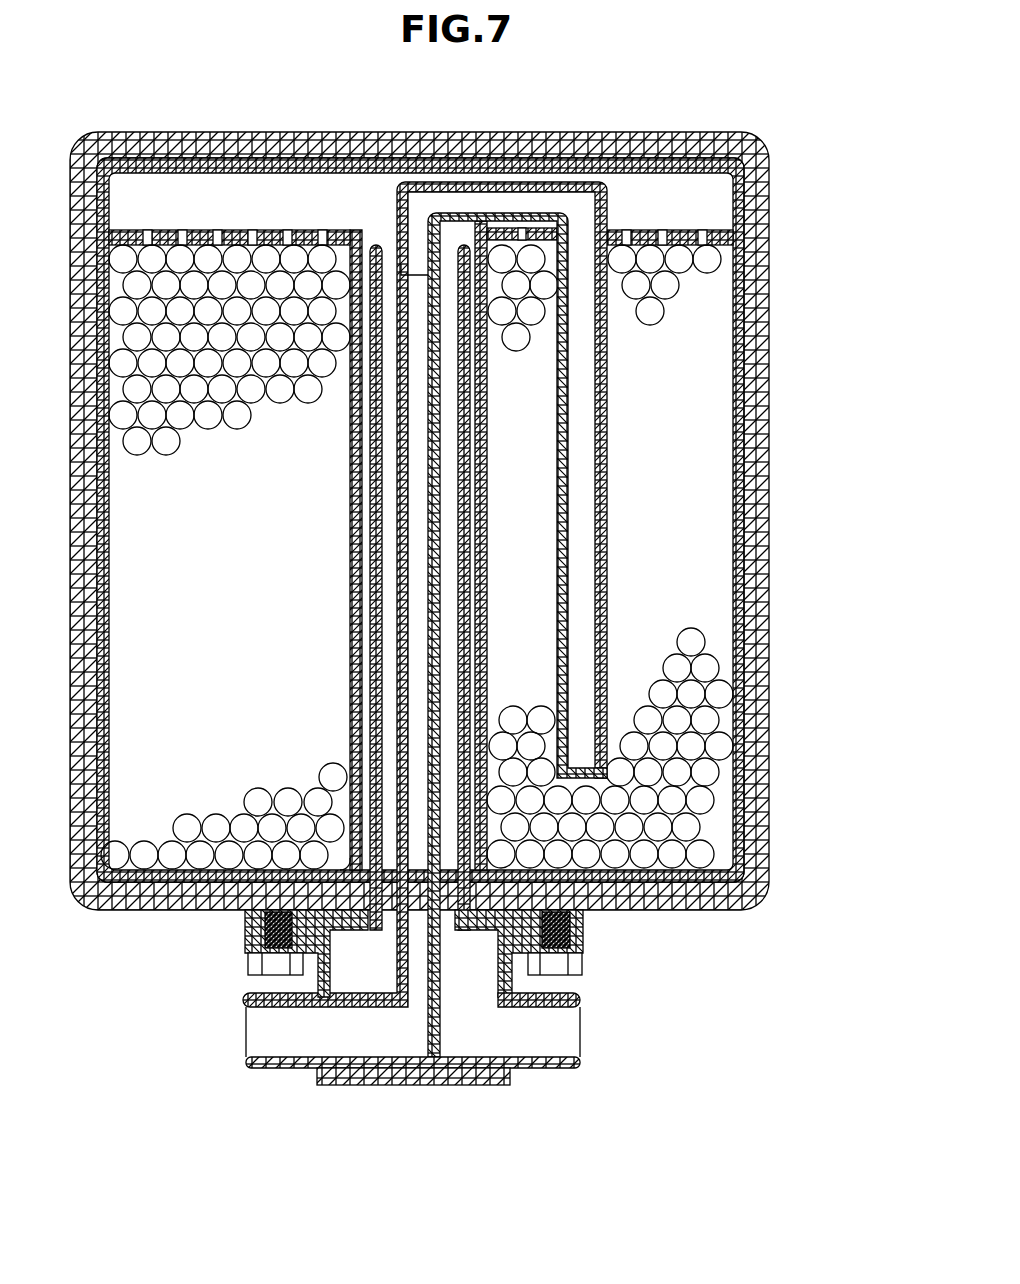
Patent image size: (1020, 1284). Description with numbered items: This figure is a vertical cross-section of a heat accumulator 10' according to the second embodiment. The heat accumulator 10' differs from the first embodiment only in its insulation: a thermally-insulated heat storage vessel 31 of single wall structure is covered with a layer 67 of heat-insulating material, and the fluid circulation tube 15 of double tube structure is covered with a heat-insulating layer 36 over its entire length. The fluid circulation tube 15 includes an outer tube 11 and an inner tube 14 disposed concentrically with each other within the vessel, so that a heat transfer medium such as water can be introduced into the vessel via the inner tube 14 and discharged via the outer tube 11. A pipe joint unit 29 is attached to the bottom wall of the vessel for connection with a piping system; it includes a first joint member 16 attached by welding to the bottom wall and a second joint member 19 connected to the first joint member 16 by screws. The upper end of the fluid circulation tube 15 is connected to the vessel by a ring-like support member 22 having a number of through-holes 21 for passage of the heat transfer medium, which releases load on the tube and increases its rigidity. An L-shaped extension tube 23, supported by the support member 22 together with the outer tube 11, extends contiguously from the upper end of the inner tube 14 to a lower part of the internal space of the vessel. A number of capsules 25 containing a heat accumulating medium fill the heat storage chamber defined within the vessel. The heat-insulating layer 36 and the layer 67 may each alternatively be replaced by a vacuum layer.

The heat accumulator 10' is at (491, 619).
The outer tube 11 is at (385, 473).
The inner tube 14 is at (396, 550).
The fluid circulation tube 15 is at (372, 613).
The first joint member 16 is at (552, 1068).
The second joint member 19 is at (245, 922).
The through-holes 21 is at (220, 230).
The support member 22 is at (267, 230).
The L-shaped extension tube 23 is at (607, 530).
The capsules 25 is at (120, 472).
The pipe joint unit 29 is at (600, 932).
The thermally-insulated heat storage vessel 31 is at (750, 414).
The heat-insulating layer 36 is at (473, 410).
The layer of heat-insulating material 67 is at (766, 673).